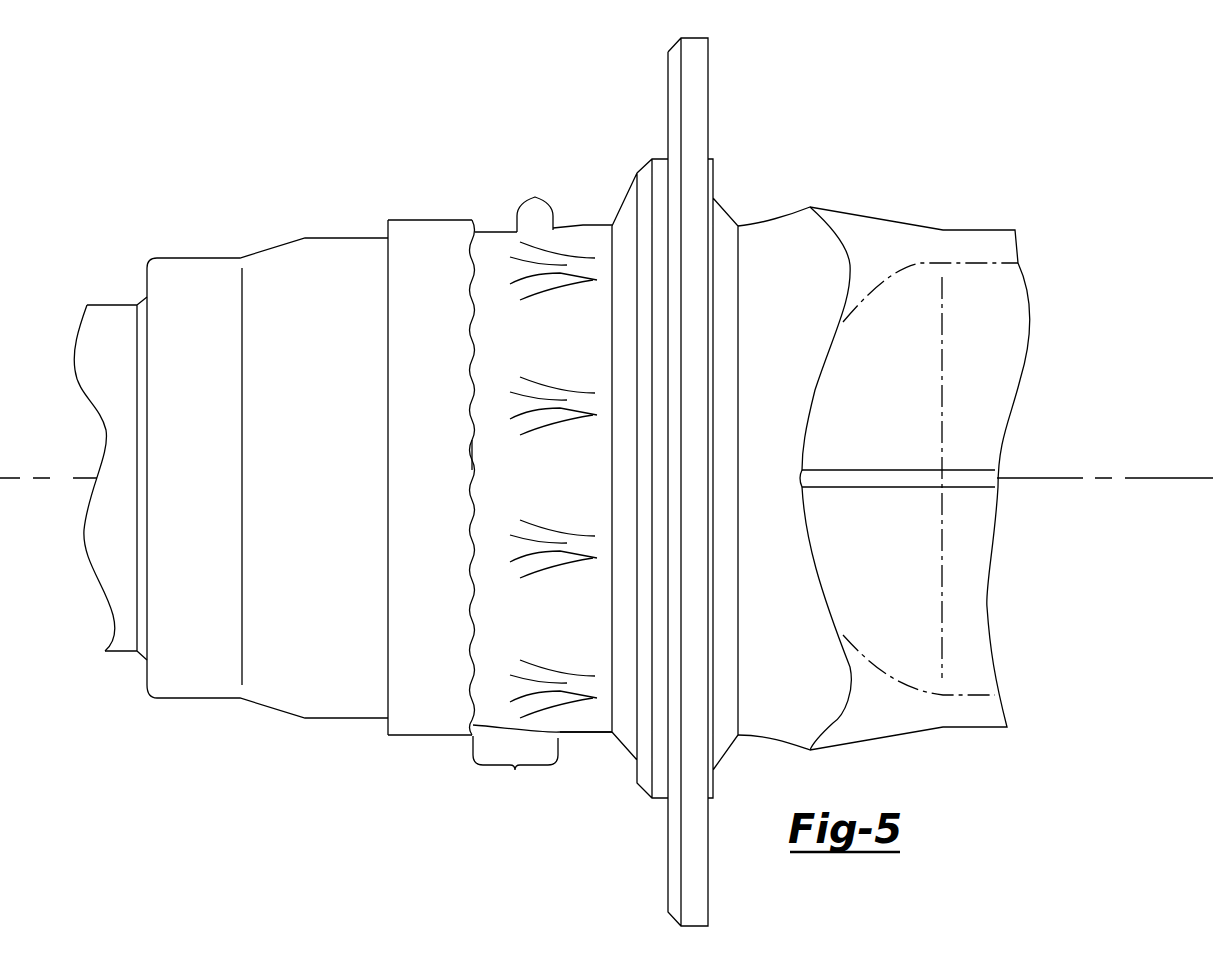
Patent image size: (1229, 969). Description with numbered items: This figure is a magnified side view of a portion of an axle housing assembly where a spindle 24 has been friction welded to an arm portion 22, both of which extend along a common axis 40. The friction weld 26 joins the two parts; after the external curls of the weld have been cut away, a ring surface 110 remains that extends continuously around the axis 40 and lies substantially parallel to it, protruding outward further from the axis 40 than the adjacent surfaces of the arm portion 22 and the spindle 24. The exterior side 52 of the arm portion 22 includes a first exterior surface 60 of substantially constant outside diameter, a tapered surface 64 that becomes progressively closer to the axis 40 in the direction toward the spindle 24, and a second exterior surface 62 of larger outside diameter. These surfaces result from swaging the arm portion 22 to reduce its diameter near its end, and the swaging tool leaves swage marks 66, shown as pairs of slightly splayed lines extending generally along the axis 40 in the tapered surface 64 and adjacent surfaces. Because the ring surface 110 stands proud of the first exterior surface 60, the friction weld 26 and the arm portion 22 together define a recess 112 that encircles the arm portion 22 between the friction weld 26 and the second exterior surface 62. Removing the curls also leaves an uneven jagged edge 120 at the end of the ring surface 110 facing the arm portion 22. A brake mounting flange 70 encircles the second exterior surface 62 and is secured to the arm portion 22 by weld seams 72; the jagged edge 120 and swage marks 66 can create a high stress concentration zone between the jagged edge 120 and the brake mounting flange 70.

The arm portion 22 is at (990, 228).
The spindle 24 is at (220, 252).
The friction weld 26 is at (388, 214).
The axis 40 is at (1157, 480).
The exterior side 52 is at (583, 742).
The first exterior surface 60 is at (497, 232).
The second exterior surface 62 is at (583, 225).
The tapered surface 64 is at (535, 197).
The swage marks 66 is at (555, 397).
The brake mounting flange 70 is at (691, 38).
The weld seams 72 is at (628, 202).
The ring surface 110 is at (432, 220).
The recess 112 is at (515, 770).
The jagged edge 120 is at (480, 455).